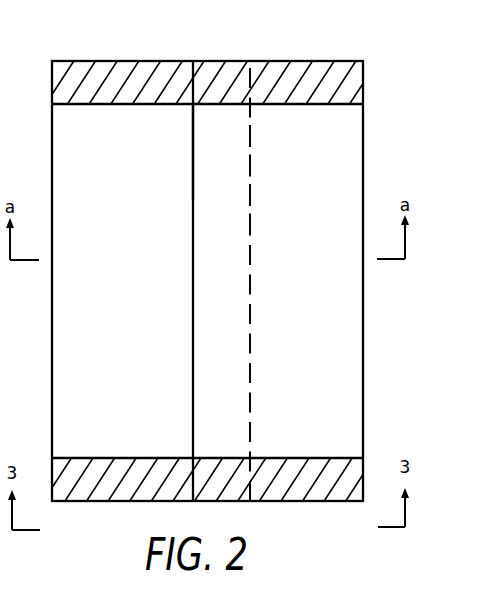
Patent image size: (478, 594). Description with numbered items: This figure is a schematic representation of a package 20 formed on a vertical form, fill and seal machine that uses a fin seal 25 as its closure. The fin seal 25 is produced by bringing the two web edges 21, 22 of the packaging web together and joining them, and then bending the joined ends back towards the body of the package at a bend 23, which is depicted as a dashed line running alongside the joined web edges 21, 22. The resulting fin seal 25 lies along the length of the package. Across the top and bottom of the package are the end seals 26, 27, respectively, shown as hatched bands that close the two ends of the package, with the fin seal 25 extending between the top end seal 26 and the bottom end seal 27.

The seal assembly / filter body 20 is at (52, 379).
The web edge 21 is at (193, 198).
The web edge 22 is at (193, 135).
The bend 23 is at (253, 153).
The fin seal 25 is at (235, 210).
The end seal 26 is at (348, 88).
The end seal 27 is at (352, 476).